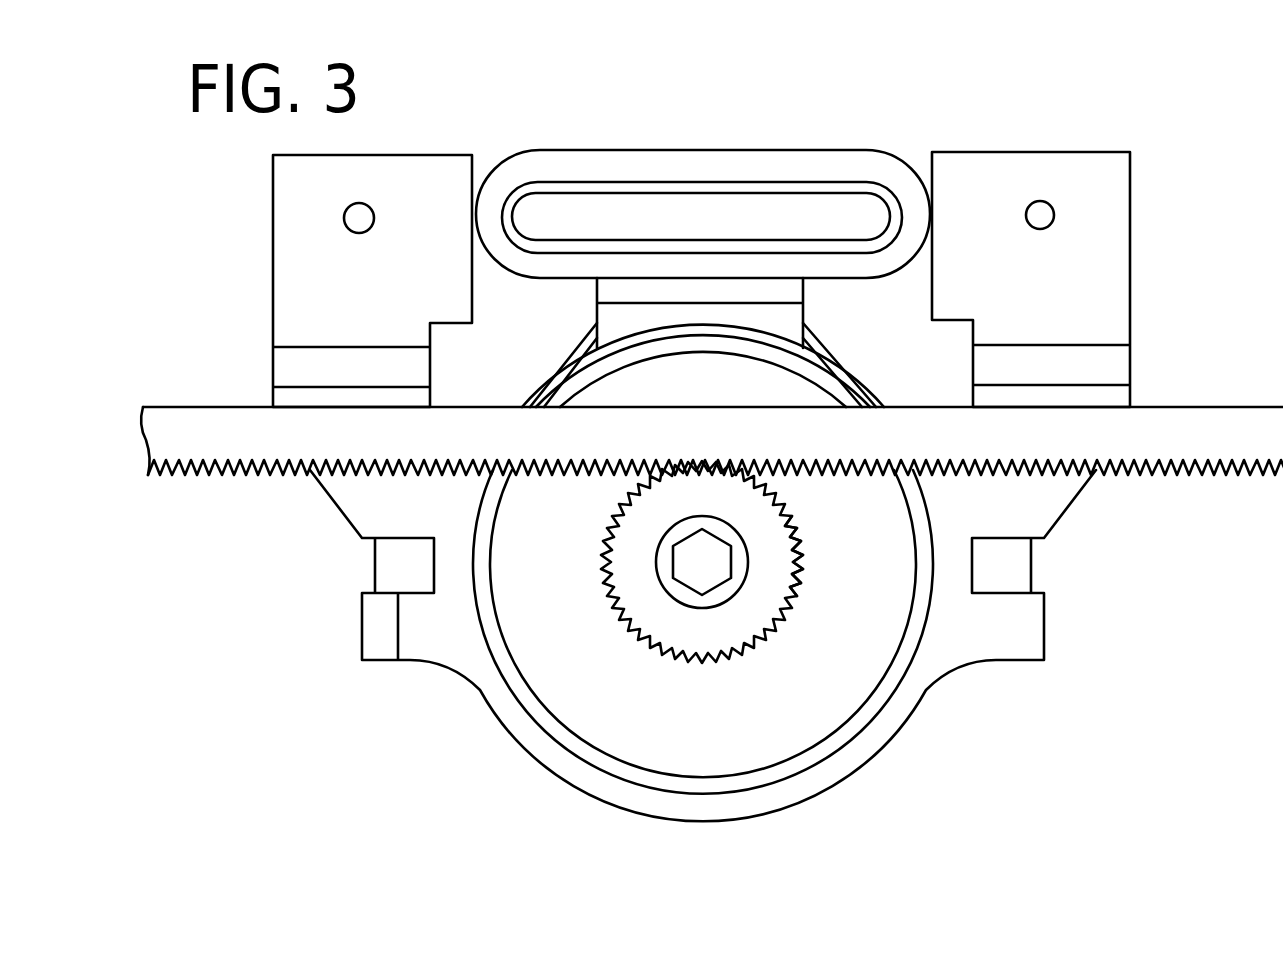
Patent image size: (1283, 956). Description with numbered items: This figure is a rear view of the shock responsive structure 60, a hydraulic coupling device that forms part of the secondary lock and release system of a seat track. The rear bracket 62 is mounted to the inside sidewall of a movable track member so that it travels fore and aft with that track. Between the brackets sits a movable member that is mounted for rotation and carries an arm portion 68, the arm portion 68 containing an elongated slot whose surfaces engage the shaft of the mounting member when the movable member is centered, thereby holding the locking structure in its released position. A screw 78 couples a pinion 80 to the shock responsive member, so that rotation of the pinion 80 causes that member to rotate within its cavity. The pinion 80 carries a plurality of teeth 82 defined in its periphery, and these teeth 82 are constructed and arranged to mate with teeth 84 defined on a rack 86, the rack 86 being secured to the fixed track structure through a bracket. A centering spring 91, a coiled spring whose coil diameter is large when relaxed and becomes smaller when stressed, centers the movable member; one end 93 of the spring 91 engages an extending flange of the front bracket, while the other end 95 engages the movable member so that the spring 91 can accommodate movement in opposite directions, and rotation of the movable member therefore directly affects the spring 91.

The shock responsive structure 60 is at (630, 742).
The rear bracket 62 is at (1118, 182).
The arm portion 68 is at (826, 162).
The screw 78 is at (708, 567).
The pinion 80 is at (793, 603).
The teeth 82 is at (777, 592).
The teeth 84 is at (578, 475).
The rack 86 is at (202, 448).
The centering spring 91 is at (850, 370).
The end of spring 93 is at (815, 330).
The other end of spring 95 is at (590, 336).